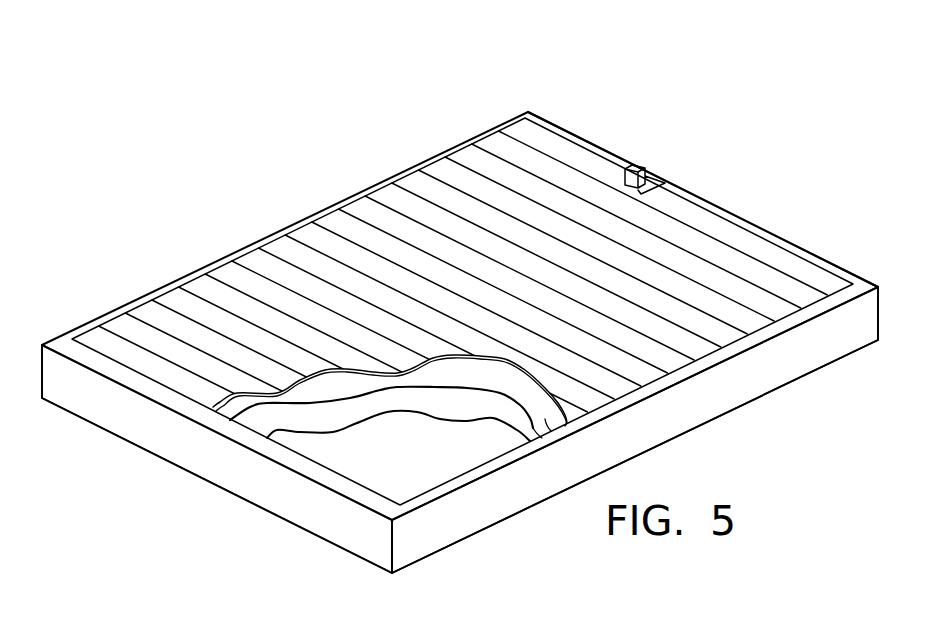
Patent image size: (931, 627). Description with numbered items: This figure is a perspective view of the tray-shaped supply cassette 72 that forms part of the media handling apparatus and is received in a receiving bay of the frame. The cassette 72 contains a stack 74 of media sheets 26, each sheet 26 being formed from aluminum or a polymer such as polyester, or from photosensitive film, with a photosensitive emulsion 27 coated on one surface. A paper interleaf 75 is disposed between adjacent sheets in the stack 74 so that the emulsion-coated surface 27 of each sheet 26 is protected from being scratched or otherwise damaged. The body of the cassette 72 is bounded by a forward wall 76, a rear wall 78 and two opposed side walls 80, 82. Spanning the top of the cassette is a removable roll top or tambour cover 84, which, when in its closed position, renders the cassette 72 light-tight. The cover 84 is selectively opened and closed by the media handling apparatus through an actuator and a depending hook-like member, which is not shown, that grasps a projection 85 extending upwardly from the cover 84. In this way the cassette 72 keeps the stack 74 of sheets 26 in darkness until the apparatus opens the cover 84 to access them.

The supply cassette 72 is at (563, 105).
The stack 74 is at (416, 431).
The paper interleaf 75 is at (545, 428).
The forward wall 76 is at (346, 198).
The rear wall 78 is at (752, 380).
The side wall 80 is at (264, 479).
The side wall 82 is at (730, 214).
The tambour cover 84 is at (730, 263).
The projection 85 is at (638, 168).
The media sheet 26 is at (556, 416).
The photosensitive emulsion 27 is at (422, 473).